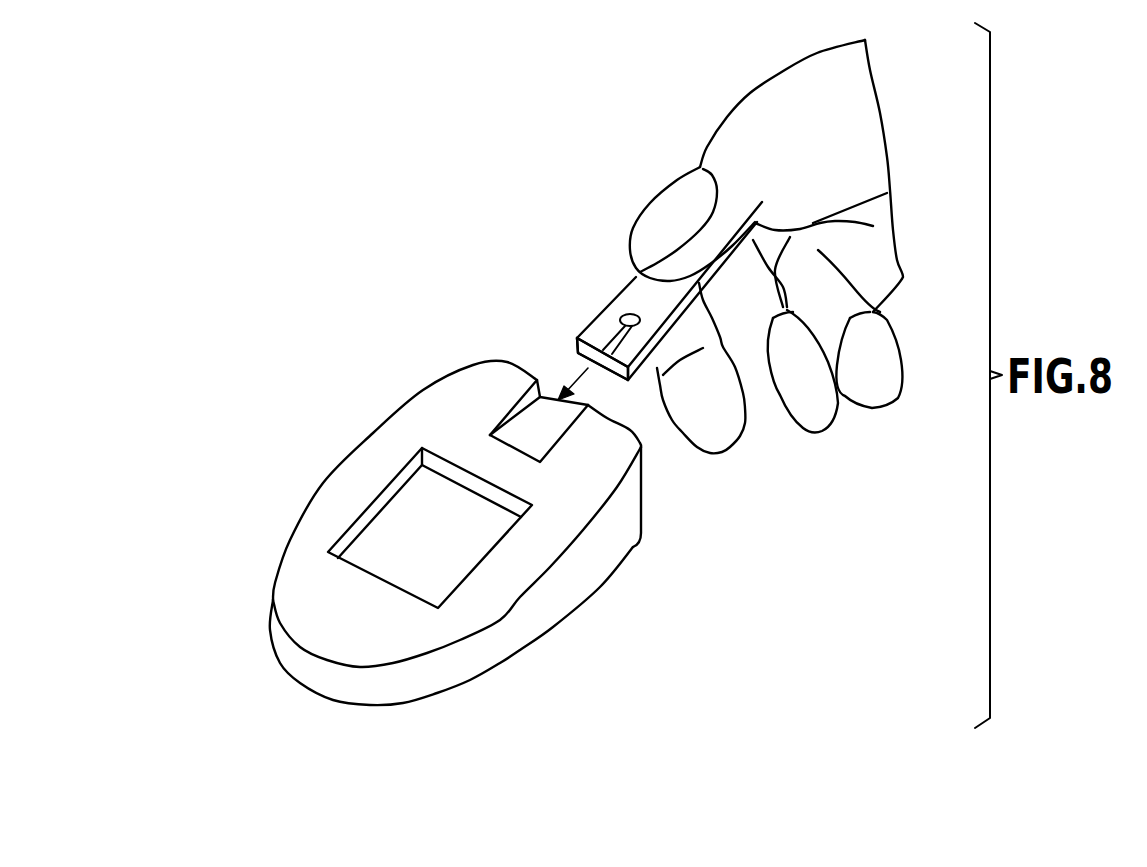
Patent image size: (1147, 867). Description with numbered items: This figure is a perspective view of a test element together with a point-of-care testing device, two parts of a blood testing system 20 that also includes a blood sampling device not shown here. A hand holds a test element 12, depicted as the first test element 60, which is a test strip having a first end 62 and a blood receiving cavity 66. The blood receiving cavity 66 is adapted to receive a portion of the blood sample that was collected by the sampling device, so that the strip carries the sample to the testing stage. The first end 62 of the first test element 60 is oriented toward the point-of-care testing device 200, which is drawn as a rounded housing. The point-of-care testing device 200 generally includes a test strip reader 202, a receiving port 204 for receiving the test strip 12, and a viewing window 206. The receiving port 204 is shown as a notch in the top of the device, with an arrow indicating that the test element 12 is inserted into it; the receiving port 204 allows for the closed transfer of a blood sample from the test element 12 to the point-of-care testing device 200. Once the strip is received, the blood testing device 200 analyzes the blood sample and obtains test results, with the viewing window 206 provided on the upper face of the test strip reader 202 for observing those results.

The blood testing system 20 is at (418, 276).
The test element 12 is at (635, 291).
The first test element 60 is at (617, 292).
The first end 62 is at (576, 361).
The blood receiving cavity 66 is at (607, 323).
The point-of-care testing device 200 is at (322, 416).
The test strip reader 202 is at (642, 497).
The receiving port 204 is at (532, 430).
The viewing window 206 is at (373, 550).